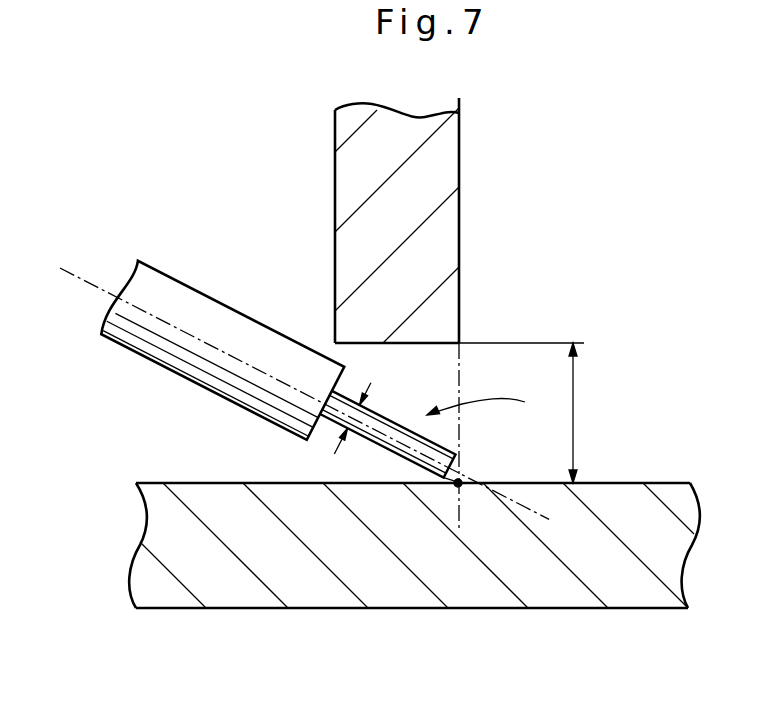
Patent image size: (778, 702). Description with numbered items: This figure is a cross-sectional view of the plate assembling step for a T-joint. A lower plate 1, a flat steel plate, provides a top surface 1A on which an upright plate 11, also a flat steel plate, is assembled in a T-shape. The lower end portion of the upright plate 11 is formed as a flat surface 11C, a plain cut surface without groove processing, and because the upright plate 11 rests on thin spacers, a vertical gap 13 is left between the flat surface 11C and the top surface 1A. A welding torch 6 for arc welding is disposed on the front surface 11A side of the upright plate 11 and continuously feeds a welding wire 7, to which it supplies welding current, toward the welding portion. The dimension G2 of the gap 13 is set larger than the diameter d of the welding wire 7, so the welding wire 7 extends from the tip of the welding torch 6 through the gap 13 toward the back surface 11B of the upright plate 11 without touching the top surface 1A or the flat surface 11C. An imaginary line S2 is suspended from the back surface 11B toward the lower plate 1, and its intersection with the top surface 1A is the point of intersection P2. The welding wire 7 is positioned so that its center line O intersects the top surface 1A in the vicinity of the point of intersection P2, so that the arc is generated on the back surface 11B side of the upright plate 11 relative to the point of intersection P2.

The lower plate 1 is at (293, 573).
The top surface 1A is at (648, 483).
The welding torch 6 is at (238, 325).
The welding wire 7 is at (435, 447).
The upright plate 11 is at (442, 153).
The front surface 11A is at (335, 170).
The back surface 11B is at (460, 234).
The flat surface 11C is at (410, 343).
The gap 13 is at (494, 401).
The dimension of the gap G2 is at (536, 413).
The imaginary line S2 is at (458, 314).
The point of intersection P2 is at (456, 486).
The center line O is at (303, 397).
The diameter of the welding wire d is at (353, 425).